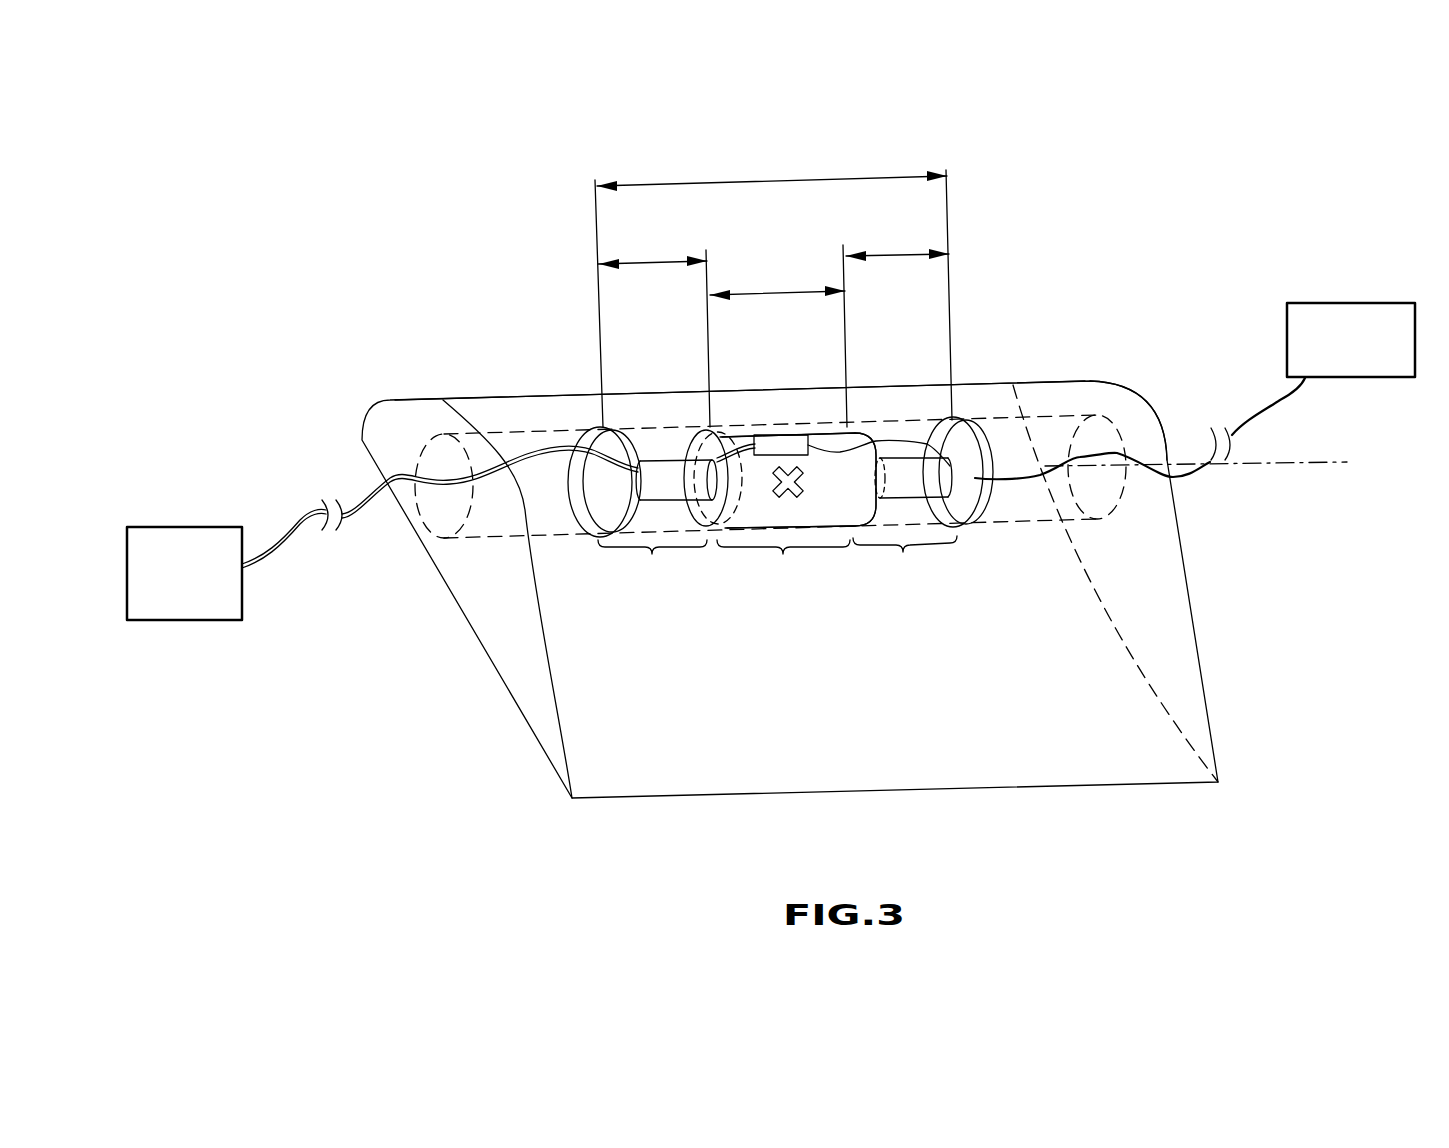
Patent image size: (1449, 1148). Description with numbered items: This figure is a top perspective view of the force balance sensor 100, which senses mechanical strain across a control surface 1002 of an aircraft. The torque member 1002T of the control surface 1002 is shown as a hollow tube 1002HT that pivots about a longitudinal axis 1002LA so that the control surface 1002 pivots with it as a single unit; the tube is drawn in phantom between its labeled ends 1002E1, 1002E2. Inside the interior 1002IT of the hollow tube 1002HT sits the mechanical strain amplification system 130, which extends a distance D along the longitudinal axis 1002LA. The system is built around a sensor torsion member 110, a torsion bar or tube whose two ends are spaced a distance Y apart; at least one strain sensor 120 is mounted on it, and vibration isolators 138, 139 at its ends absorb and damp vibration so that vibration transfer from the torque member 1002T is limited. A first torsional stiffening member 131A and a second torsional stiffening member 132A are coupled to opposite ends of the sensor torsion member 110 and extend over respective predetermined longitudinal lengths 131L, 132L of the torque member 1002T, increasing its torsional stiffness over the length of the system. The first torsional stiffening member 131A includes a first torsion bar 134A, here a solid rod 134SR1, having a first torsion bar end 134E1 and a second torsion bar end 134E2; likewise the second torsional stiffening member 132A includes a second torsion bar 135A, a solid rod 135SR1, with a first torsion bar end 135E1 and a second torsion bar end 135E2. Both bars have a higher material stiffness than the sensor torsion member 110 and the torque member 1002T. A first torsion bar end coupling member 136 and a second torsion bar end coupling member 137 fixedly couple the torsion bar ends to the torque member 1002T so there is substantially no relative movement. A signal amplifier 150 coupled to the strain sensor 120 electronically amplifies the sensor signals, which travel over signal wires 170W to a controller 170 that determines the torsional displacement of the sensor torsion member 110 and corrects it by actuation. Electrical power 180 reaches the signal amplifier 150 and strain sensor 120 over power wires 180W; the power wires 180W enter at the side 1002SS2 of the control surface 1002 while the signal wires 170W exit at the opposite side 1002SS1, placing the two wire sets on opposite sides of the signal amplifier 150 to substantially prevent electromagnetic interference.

The force balance sensor 100 is at (1175, 120).
The sensor torsion member 110 is at (783, 554).
The strain sensor 120 is at (795, 497).
The mechanical strain amplification system 130 is at (1005, 318).
The first torsional stiffening member 131A is at (652, 554).
The second torsional stiffening member 132A is at (903, 552).
The first torsion bar 134A is at (657, 500).
The first torsion bar end 134E1 is at (652, 497).
The second torsion bar end 134E2 is at (708, 500).
The solid rod 134SR1 is at (655, 425).
The second torsion bar 135A is at (925, 497).
The first torsion bar end 135E1 is at (953, 475).
The second torsion bar end 135E2 is at (882, 505).
The solid rod 135SR1 is at (916, 430).
The first torsion bar end coupling member 136 is at (590, 535).
The second torsion bar end coupling member 137 is at (960, 423).
The vibration isolator 138 is at (715, 530).
The vibration isolator 139 is at (876, 442).
The signal amplifier 150 is at (768, 433).
The controller 170 is at (197, 622).
The signal wires 170W is at (268, 568).
The electrical power 180 is at (1312, 302).
The power wires 180W is at (1267, 412).
The control surface 1002 is at (1208, 708).
The torque member 1002T is at (542, 430).
The interior 1002IT is at (440, 458).
The hollow tube 1002HT is at (1060, 420).
The cover first end 1002E1 is at (428, 527).
The cover second end 1002E2 is at (1120, 432).
The side of control surface 1002SS1 is at (484, 602).
The side of control surface 1002SS2 is at (1147, 578).
The longitudinal axis 1002LA is at (1327, 463).
The distance D is at (738, 183).
The distance Y is at (767, 293).
The predetermined longitudinal length 131L is at (650, 263).
The predetermined longitudinal length 132L is at (893, 257).